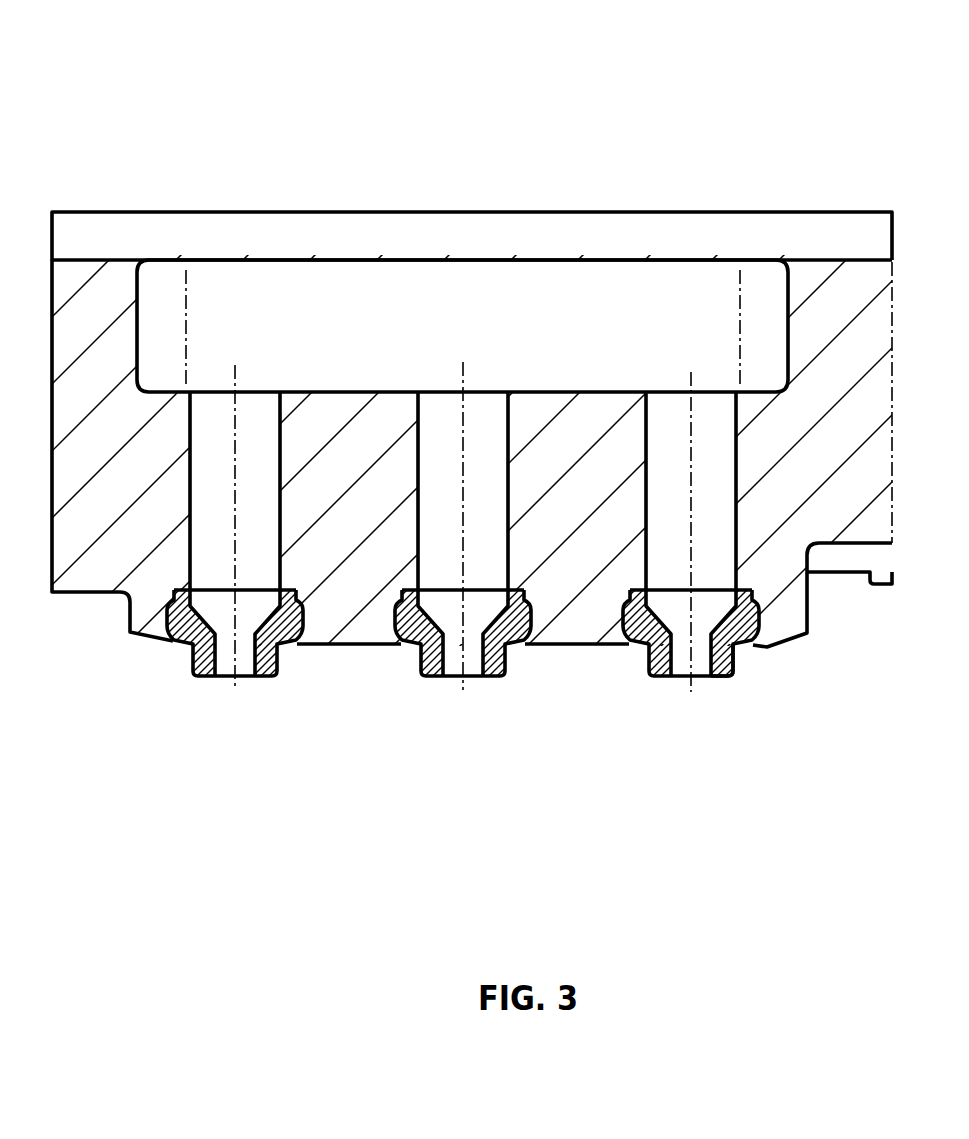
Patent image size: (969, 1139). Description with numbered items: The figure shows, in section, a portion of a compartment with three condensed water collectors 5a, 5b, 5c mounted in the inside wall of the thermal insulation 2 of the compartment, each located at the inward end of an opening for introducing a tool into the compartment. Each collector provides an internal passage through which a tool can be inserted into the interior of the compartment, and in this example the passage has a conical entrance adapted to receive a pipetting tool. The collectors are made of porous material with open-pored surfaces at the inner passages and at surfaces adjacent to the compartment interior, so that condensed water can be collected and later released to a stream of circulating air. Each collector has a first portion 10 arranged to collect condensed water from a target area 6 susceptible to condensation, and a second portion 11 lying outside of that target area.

The thermal insulation 2 is at (837, 353).
The target area 6 is at (455, 443).
The condensed water collector 5a is at (228, 709).
The condensed water collector 5b is at (438, 694).
The condensed water collector 5c is at (725, 694).
The first portion 10 is at (652, 627).
The second portion 11 is at (733, 681).